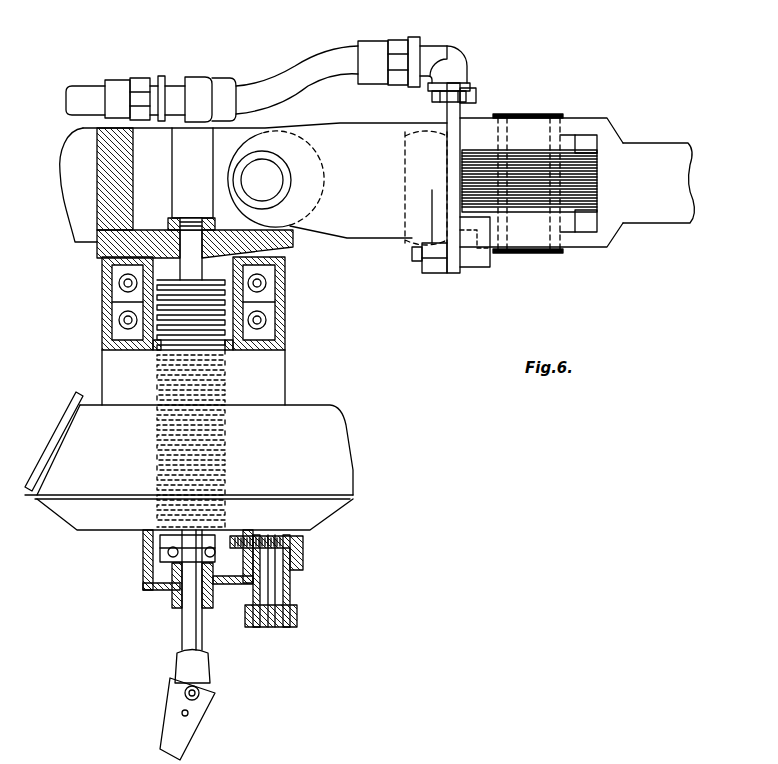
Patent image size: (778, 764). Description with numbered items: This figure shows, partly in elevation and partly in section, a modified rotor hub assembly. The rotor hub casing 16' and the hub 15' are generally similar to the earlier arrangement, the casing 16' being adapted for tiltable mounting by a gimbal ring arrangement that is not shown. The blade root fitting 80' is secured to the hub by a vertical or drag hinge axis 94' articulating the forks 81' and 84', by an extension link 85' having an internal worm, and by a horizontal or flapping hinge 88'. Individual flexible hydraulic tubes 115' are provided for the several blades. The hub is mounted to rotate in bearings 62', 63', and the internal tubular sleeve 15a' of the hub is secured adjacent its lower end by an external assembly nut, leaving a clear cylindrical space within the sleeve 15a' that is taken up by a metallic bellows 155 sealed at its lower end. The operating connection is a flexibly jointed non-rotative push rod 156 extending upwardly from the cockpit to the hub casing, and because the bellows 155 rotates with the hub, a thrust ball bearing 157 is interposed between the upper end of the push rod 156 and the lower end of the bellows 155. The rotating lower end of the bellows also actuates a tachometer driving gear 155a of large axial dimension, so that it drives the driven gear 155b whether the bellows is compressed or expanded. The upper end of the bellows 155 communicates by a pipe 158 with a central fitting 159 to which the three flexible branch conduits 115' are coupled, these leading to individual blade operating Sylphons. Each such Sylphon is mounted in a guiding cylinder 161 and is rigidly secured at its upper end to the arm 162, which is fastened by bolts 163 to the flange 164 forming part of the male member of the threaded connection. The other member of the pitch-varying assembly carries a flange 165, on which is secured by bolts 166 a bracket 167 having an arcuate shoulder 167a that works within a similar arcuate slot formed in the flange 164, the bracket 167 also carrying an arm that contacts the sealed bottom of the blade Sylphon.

The flexible hydraulic tube 115' is at (261, 79).
The arm 162 is at (462, 86).
The bolt 163 is at (476, 98).
The flange 164 is at (432, 97).
The flange 165 is at (452, 275).
The hub 15' is at (78, 194).
The extension link 85' is at (265, 180).
The flapping hinge 88' is at (276, 179).
The guiding cylinder 161 is at (410, 185).
The central fitting 159 is at (191, 204).
The pipe 158 is at (285, 245).
The bolt 166 is at (412, 256).
The bracket 167 is at (428, 270).
The arcuate shoulder 167a is at (470, 266).
The fork 81' is at (541, 184).
The drag hinge axis 94' is at (529, 167).
The fork 84' is at (605, 183).
The blade root fitting 80' is at (658, 171).
The bearing 62' is at (177, 303).
The bearing 63' is at (172, 317).
The metallic bellows 155 is at (201, 336).
The internal tubular sleeve 15a' is at (165, 372).
The rotor hub casing 16' is at (189, 461).
The thrust ball bearing 157 is at (160, 552).
The tachometer driving gear 155a is at (255, 570).
The driven gear 155b is at (305, 542).
The push rod 156 is at (183, 652).